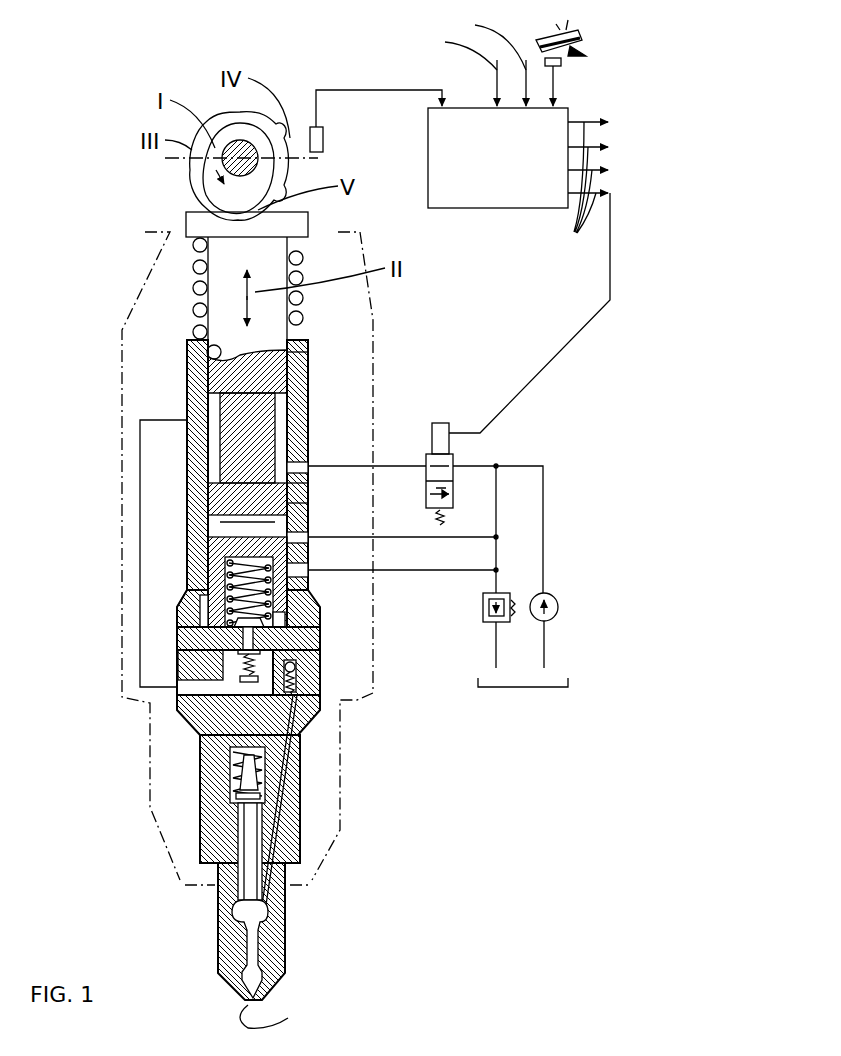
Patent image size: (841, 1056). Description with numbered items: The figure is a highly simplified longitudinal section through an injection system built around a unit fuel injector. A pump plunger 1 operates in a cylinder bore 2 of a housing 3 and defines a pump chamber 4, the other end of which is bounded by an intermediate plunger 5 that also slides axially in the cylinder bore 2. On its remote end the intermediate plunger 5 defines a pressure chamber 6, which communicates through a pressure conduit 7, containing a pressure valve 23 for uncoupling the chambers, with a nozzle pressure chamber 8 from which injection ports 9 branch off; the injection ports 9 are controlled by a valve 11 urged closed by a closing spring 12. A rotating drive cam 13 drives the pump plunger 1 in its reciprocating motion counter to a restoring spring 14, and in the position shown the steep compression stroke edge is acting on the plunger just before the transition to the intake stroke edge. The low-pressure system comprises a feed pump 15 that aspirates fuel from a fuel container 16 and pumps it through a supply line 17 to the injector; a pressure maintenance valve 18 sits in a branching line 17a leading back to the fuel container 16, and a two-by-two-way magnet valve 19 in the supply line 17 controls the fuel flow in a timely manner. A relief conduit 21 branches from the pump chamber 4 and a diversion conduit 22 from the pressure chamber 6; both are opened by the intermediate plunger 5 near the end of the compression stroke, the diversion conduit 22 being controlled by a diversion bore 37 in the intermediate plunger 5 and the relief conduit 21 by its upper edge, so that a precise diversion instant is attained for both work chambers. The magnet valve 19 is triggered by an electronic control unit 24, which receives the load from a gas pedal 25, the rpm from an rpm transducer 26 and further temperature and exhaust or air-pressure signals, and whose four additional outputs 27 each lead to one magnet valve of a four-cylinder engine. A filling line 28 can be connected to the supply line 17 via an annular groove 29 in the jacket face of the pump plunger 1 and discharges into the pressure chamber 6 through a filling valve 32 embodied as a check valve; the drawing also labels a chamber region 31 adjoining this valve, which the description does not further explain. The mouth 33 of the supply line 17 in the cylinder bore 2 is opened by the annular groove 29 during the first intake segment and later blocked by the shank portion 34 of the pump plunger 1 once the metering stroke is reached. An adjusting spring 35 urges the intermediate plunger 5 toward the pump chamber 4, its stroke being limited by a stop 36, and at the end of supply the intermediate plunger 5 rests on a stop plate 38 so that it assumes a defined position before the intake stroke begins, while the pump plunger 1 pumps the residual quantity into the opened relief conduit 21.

The pump plunger 1 is at (275, 330).
The cylinder bore 2 is at (188, 366).
The housing 3 is at (303, 350).
The pump chamber 4 is at (330, 490).
The intermediate plunger 5 is at (315, 612).
The pressure chamber 6 is at (318, 622).
The pressure conduit 7 is at (320, 722).
The nozzle pressure chamber 8 is at (292, 915).
The injection ports 9 is at (272, 1012).
The valve 11 is at (200, 830).
The closing spring 12 is at (200, 765).
The drive cam 13 is at (222, 193).
The restoring spring 14 is at (198, 270).
The feed pump 15 is at (553, 595).
The fuel container 16 is at (540, 688).
The supply line 17 is at (335, 466).
The branching line 17a is at (496, 480).
The pressure maintenance valve 18 is at (510, 620).
The 2/2-way magnet valve 19 is at (440, 460).
The relief conduit 21 is at (470, 537).
The diversion conduit 22 is at (470, 570).
The pressure valve 23 is at (322, 685).
The electronic control unit 24 is at (466, 200).
The gas pedal 25 is at (553, 45).
The rpm transducer 26 is at (312, 130).
The additional outputs 27 is at (580, 226).
The filling line 28 is at (178, 645).
The annular groove 29 is at (188, 405).
The relief chamber 31 is at (178, 676).
The filling valve 32 is at (178, 650).
The mouth of the supply line 33 is at (308, 458).
The shank portion 34 is at (240, 490).
The adjusting spring 35 is at (190, 578).
The stop 36 is at (178, 607).
The diversion bore 37 is at (310, 590).
The stop plate 38 is at (320, 640).